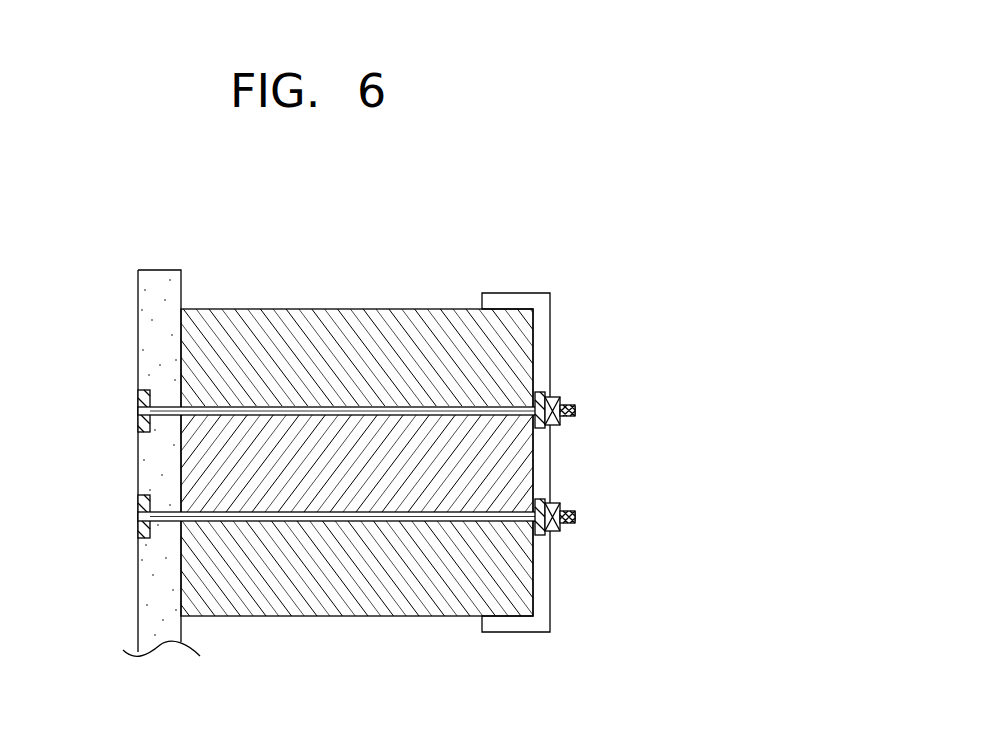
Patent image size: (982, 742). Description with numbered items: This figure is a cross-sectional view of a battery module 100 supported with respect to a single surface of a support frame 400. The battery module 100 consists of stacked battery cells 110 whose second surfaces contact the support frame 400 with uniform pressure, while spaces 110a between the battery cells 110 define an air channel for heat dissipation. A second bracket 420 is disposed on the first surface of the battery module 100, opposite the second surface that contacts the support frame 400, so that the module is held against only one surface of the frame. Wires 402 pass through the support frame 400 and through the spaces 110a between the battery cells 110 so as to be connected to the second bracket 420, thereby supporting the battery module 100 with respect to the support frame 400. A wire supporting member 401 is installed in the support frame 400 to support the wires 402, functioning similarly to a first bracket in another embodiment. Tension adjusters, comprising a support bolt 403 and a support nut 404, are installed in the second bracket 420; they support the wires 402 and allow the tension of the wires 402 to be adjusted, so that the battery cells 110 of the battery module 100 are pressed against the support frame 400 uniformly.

The support frame 400 is at (157, 280).
The battery module 100 is at (356, 448).
The battery cells 110 is at (362, 342).
The spaces between the battery cells 110a is at (378, 520).
The second bracket 420 is at (503, 297).
The wire supporting member 401 is at (137, 407).
The wires 402 is at (192, 426).
The support bolt 403 is at (576, 410).
The support nut 404 is at (562, 397).